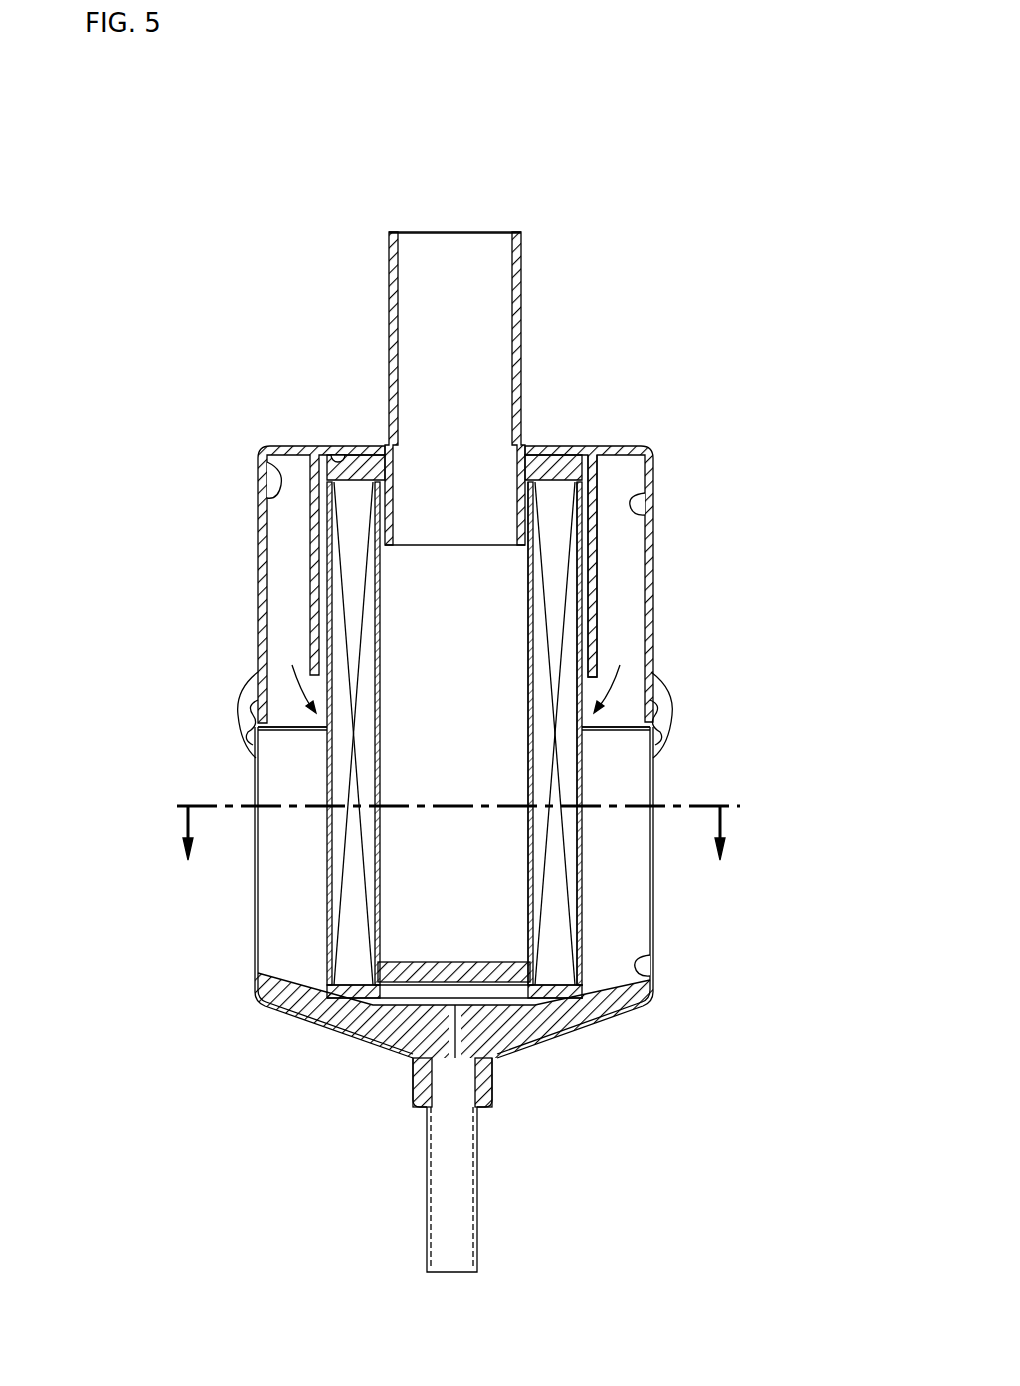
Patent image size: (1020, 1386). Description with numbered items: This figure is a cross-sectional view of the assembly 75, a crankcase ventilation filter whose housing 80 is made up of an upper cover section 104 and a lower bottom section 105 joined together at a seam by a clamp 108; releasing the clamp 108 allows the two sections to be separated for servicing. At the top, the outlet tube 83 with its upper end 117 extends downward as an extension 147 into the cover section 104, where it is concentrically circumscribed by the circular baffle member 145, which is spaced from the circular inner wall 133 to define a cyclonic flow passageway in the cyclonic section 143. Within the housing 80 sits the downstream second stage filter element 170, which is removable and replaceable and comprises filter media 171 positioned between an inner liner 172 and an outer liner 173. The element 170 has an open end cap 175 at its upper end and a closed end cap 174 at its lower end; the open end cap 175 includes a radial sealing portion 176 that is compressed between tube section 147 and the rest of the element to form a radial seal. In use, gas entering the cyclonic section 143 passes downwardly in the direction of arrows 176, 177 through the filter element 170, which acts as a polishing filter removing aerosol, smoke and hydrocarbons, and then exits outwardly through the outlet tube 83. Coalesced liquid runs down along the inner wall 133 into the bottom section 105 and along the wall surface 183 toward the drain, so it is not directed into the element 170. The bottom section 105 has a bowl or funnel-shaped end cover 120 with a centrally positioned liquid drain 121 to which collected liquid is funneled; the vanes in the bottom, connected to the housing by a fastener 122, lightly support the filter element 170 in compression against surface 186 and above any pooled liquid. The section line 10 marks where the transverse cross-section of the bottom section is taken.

The inlet tube end 117 is at (522, 240).
The outlet tube construction 83 is at (524, 312).
The assembly 75 is at (618, 356).
The surface 186 is at (342, 453).
The cyclonic section 143 is at (262, 453).
The radial sealing portion 176 is at (387, 487).
The open end cap 175 is at (548, 460).
The baffle member 145 is at (598, 491).
The inner wall 133 is at (647, 498).
The cover section 104 is at (651, 571).
The housing 80 is at (683, 637).
The clamp 108 is at (683, 723).
The extension 147 is at (445, 540).
The arrows 177 is at (622, 668).
The inner liner 172 is at (526, 760).
The filter media 171 is at (592, 797).
The line 10— 10 is at (447, 833).
The bottom section 105 is at (655, 876).
The closed end cap 174 is at (416, 970).
The outer liner 173 is at (585, 905).
The filter element 170 is at (582, 928).
The wall surface 183 is at (648, 968).
The end cover 120 is at (578, 1046).
The fastener 122 is at (494, 1085).
The liquid drain 121 is at (479, 1188).